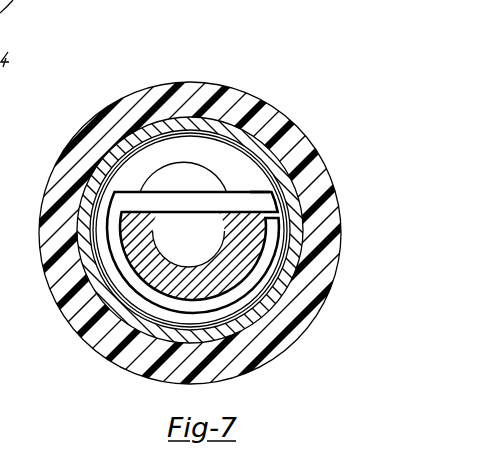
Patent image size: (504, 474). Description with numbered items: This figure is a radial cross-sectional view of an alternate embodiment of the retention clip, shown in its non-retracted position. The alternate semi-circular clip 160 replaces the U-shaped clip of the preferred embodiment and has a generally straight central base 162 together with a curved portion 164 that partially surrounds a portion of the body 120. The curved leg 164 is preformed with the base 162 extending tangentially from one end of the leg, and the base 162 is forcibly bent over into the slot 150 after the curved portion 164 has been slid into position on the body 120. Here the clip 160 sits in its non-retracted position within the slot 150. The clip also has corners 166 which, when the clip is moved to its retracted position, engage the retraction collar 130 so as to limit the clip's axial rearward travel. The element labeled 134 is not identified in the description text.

The body 120 is at (291, 333).
The retraction collar 130 is at (153, 139).
The bore 134 is at (197, 126).
The slot 150 is at (143, 212).
The semi-circular clip 160 is at (258, 188).
The central base 162 is at (230, 196).
The curved portion 164 is at (238, 306).
The corners 166 is at (100, 190).